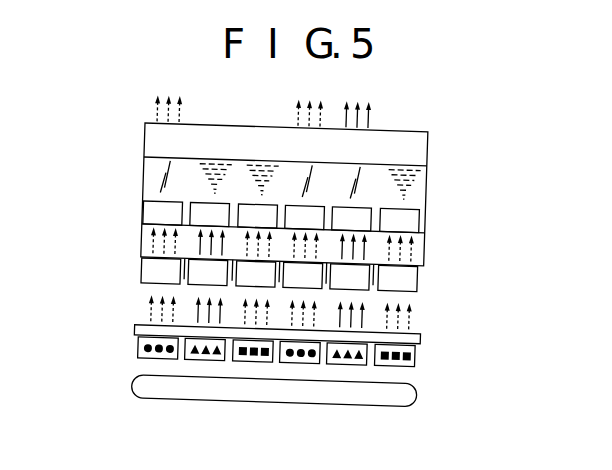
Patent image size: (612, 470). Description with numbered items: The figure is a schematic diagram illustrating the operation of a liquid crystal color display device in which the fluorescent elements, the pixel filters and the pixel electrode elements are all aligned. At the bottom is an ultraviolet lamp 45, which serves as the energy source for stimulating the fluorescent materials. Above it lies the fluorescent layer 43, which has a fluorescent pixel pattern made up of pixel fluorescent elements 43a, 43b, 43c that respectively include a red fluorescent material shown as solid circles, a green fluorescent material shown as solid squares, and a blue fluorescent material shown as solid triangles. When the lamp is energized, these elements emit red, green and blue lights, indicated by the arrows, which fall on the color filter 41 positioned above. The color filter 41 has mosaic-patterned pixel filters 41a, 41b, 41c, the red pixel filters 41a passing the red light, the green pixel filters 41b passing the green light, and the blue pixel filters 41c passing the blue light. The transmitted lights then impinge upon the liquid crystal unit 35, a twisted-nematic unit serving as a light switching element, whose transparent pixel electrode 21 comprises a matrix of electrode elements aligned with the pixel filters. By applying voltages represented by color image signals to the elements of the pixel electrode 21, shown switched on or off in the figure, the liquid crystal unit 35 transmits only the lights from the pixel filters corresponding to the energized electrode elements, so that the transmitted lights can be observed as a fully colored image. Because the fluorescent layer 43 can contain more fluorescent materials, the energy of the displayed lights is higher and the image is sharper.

The transparent pixel electrode 21 is at (148, 212).
The liquid crystal unit 35 is at (442, 272).
The color filter 41 is at (228, 285).
The red pixel filter 41a is at (142, 262).
The green pixel filter 41b is at (173, 284).
The blue pixel filter 41c is at (243, 283).
The fluorescent layer 43 is at (229, 359).
The pixel fluorescent element 43a is at (138, 346).
The pixel fluorescent element 43b is at (180, 361).
The pixel fluorescent element 43c is at (237, 362).
The ultraviolet lamp 45 is at (418, 396).